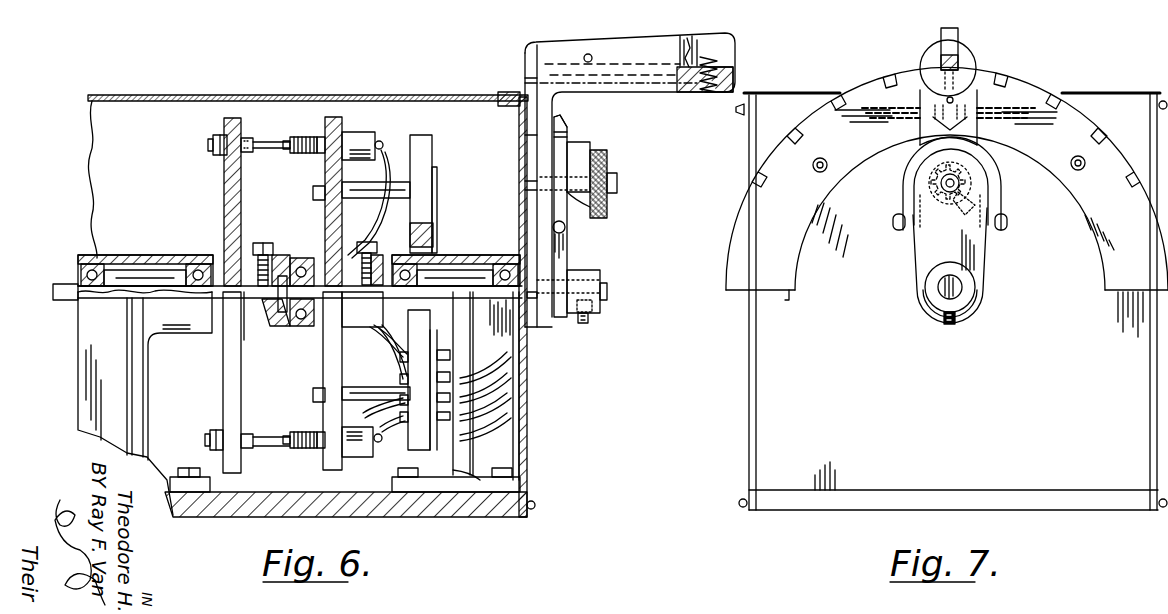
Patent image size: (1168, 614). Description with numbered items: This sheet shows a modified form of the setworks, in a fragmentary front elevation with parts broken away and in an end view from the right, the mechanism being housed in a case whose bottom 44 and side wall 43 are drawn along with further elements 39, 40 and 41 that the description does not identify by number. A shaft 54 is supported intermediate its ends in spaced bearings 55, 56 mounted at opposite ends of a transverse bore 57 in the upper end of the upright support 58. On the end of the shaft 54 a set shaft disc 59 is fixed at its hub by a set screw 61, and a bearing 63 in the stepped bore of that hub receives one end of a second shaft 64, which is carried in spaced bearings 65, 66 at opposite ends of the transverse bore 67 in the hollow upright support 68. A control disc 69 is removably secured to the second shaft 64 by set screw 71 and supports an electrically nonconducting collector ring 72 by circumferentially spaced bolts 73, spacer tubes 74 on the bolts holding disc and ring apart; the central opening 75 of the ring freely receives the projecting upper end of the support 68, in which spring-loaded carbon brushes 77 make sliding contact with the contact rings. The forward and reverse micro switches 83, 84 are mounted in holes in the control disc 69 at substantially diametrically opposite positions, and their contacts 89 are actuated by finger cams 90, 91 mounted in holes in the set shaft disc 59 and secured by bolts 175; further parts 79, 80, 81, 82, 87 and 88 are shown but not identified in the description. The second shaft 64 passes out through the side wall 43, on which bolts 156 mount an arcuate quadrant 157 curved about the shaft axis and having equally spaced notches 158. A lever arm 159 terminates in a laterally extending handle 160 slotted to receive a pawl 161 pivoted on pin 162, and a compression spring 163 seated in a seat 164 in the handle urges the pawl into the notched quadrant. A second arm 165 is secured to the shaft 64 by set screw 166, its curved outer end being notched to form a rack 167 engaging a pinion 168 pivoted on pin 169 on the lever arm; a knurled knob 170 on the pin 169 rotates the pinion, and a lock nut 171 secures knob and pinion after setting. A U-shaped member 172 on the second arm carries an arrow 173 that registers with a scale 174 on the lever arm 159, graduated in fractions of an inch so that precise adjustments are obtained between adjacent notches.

In FIG. 7, the housing 39 is at (752, 447).
In FIG. 6, the top cover plate 40 is at (193, 95).
In FIG. 7, the top cover plate 40 is at (1098, 93).
In FIG. 7, the right side wall 41 is at (1150, 405).
In FIG. 6, the side wall 43 is at (527, 450).
In FIG. 7, the side wall 43 is at (756, 388).
In FIG. 6, the bottom 44 is at (468, 506).
In FIG. 7, the bottom 44 is at (795, 505).
In FIG. 6, the shaft 54 is at (68, 290).
In FIG. 6, the bearing 55 is at (136, 254).
In FIG. 6, the bearing 56 is at (197, 266).
In FIG. 6, the transverse bore 57 is at (148, 272).
In FIG. 6, the upright support 58 is at (86, 348).
In FIG. 6, the set shaft disc 59 is at (222, 376).
In FIG. 6, the set screw 61 is at (266, 243).
In FIG. 6, the bearing 63 is at (295, 322).
In FIG. 6, the second shaft 64 is at (616, 290).
In FIG. 6, the bearing 65 is at (378, 258).
In FIG. 6, the bearing 66 is at (504, 266).
In FIG. 6, the transverse bore 67 is at (456, 252).
In FIG. 6, the upright support 68 is at (478, 440).
In FIG. 6, the control disc 69 is at (322, 370).
In FIG. 6, the set screw 71 is at (360, 255).
In FIG. 6, the collector ring 72 is at (433, 158).
In FIG. 6, the bolt 73 is at (312, 195).
In FIG. 6, the spacer tube 74 is at (370, 184).
In FIG. 6, the central opening 75 is at (433, 240).
In FIG. 6, the carbon brush 77 is at (435, 432).
In FIG. 6, the wire 79 is at (380, 340).
In FIG. 6, the wire 80 is at (400, 375).
In FIG. 6, the wire 81 is at (372, 411).
In FIG. 6, the wire 82 is at (388, 430).
In FIG. 6, the forward micro switch 83 is at (358, 140).
In FIG. 6, the reverse micro switch 84 is at (364, 458).
In FIG. 6, the washer 87 is at (290, 152).
In FIG. 6, the nut 88 is at (320, 136).
In FIG. 6, the contact 89 is at (298, 138).
In FIG. 6, the finger cam 90 is at (268, 140).
In FIG. 6, the finger cam 91 is at (268, 447).
In FIG. 7, the bolt 156 is at (816, 172).
In FIG. 6, the quadrant 157 is at (533, 260).
In FIG. 7, the quadrant 157 is at (790, 293).
In FIG. 6, the notch 158 is at (528, 190).
In FIG. 7, the notch 158 is at (887, 82).
In FIG. 6, the lever arm 159 is at (543, 328).
In FIG. 7, the lever arm 159 is at (985, 85).
In FIG. 6, the handle 160 is at (565, 55).
In FIG. 7, the handle 160 is at (975, 60).
In FIG. 6, the pawl 161 is at (660, 37).
In FIG. 7, the pawl 161 is at (960, 34).
In FIG. 6, the pin 162 is at (592, 54).
In FIG. 6, the compression spring 163 is at (725, 72).
In FIG. 7, the compression spring 163 is at (940, 62).
In FIG. 6, the seat 164 is at (712, 95).
In FIG. 6, the second arm 165 is at (583, 313).
In FIG. 7, the second arm 165 is at (915, 250).
In FIG. 6, the set screw 166 is at (590, 318).
In FIG. 7, the set screw 166 is at (945, 326).
In FIG. 7, the rack 167 is at (920, 210).
In FIG. 7, the pinion 168 is at (930, 185).
In FIG. 7, the pin 169 is at (968, 192).
In FIG. 6, the knurled knob 170 is at (608, 162).
In FIG. 7, the knurled knob 170 is at (965, 205).
In FIG. 6, the lock nut 171 is at (618, 184).
In FIG. 7, the lock nut 171 is at (960, 183).
In FIG. 6, the U-shaped member 172 is at (570, 150).
In FIG. 7, the U-shaped member 172 is at (902, 205).
In FIG. 6, the arrow 173 is at (569, 121).
In FIG. 7, the arrow 173 is at (985, 133).
In FIG. 7, the scale 174 is at (935, 112).
In FIG. 6, the bolt 175 is at (212, 142).